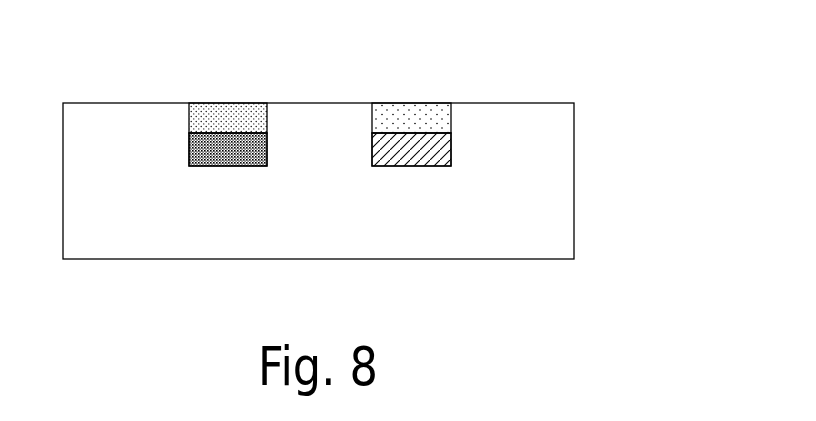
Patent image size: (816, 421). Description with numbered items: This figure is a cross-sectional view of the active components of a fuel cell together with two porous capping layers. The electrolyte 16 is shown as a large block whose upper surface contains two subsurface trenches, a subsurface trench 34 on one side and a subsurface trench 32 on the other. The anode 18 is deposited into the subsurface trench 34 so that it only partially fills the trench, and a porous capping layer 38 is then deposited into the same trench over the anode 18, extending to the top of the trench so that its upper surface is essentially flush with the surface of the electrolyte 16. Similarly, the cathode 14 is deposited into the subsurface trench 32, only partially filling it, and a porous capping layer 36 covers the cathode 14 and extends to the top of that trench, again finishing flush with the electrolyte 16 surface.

The electrolyte 16 is at (574, 227).
The anode 18 is at (190, 152).
The cathode 14 is at (451, 147).
The porous capping layer 38 is at (215, 103).
The subsurface trench 34 is at (228, 167).
The porous capping layer 36 is at (427, 103).
The subsurface trench 32 is at (413, 166).